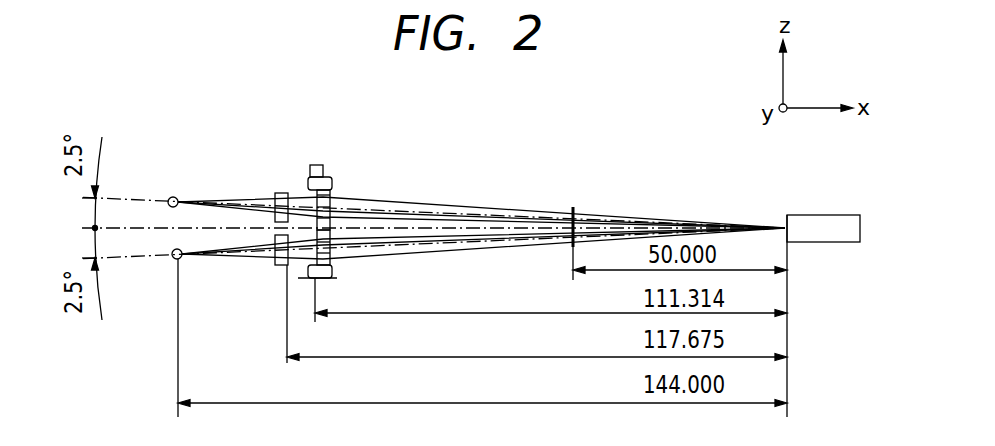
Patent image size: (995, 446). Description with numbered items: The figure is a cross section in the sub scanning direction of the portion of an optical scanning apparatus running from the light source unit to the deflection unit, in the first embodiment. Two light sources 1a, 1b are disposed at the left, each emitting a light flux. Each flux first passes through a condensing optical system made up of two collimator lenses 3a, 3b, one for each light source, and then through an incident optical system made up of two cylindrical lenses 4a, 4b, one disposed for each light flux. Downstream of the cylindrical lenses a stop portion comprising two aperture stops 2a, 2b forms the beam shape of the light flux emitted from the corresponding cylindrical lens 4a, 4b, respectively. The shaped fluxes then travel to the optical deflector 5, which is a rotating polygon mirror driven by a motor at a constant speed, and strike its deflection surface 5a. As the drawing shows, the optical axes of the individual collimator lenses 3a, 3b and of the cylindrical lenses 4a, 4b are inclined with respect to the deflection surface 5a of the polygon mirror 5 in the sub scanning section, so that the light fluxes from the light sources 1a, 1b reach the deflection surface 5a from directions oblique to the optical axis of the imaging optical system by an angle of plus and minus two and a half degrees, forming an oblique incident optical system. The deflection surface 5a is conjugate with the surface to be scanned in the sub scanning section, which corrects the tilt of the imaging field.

The light source 1a is at (168, 202).
The light source 1b is at (172, 254).
The aperture stop 2a is at (565, 205).
The aperture stop 2b is at (571, 245).
The collimator lens 3a is at (275, 196).
The collimator lens 3b is at (275, 242).
The cylindrical lens 4a is at (332, 232).
The cylindrical lens 4b is at (320, 254).
The optical deflector 5 is at (822, 222).
The deflection surface 5a is at (783, 220).